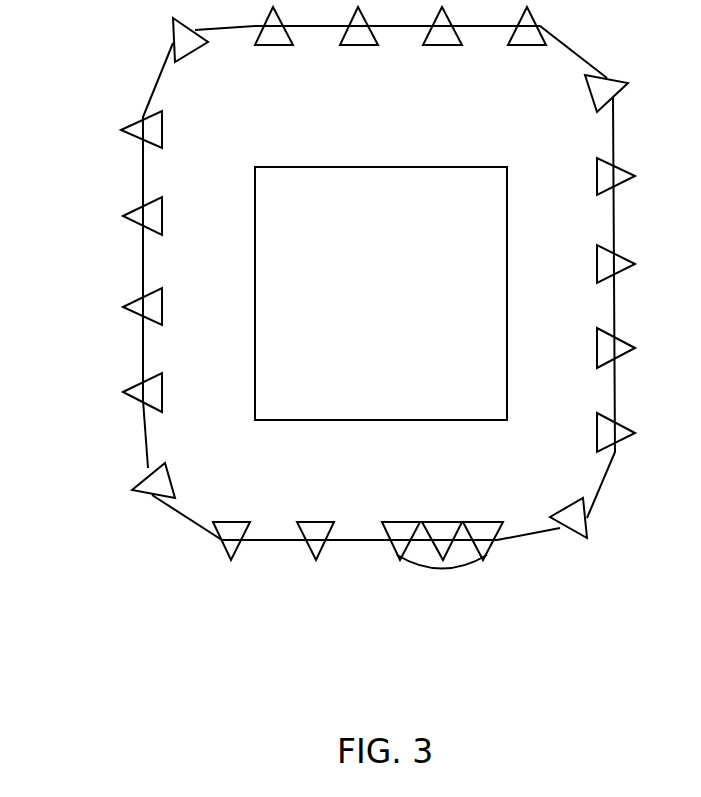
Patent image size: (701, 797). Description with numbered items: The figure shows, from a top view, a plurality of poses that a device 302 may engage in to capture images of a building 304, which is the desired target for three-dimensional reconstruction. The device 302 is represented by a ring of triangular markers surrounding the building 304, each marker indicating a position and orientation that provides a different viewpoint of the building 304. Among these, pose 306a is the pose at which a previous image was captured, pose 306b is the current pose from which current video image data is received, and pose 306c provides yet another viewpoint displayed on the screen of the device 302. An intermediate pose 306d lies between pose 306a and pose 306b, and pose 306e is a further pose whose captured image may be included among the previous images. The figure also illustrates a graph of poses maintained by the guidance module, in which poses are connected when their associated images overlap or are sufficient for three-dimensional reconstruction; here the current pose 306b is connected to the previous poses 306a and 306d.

The device 302 is at (123, 215).
The building 304 is at (355, 167).
The pose 306a is at (393, 547).
The pose 306b is at (492, 548).
The pose 306c is at (587, 533).
The intermediate pose 306d is at (442, 520).
The pose 306e is at (316, 522).